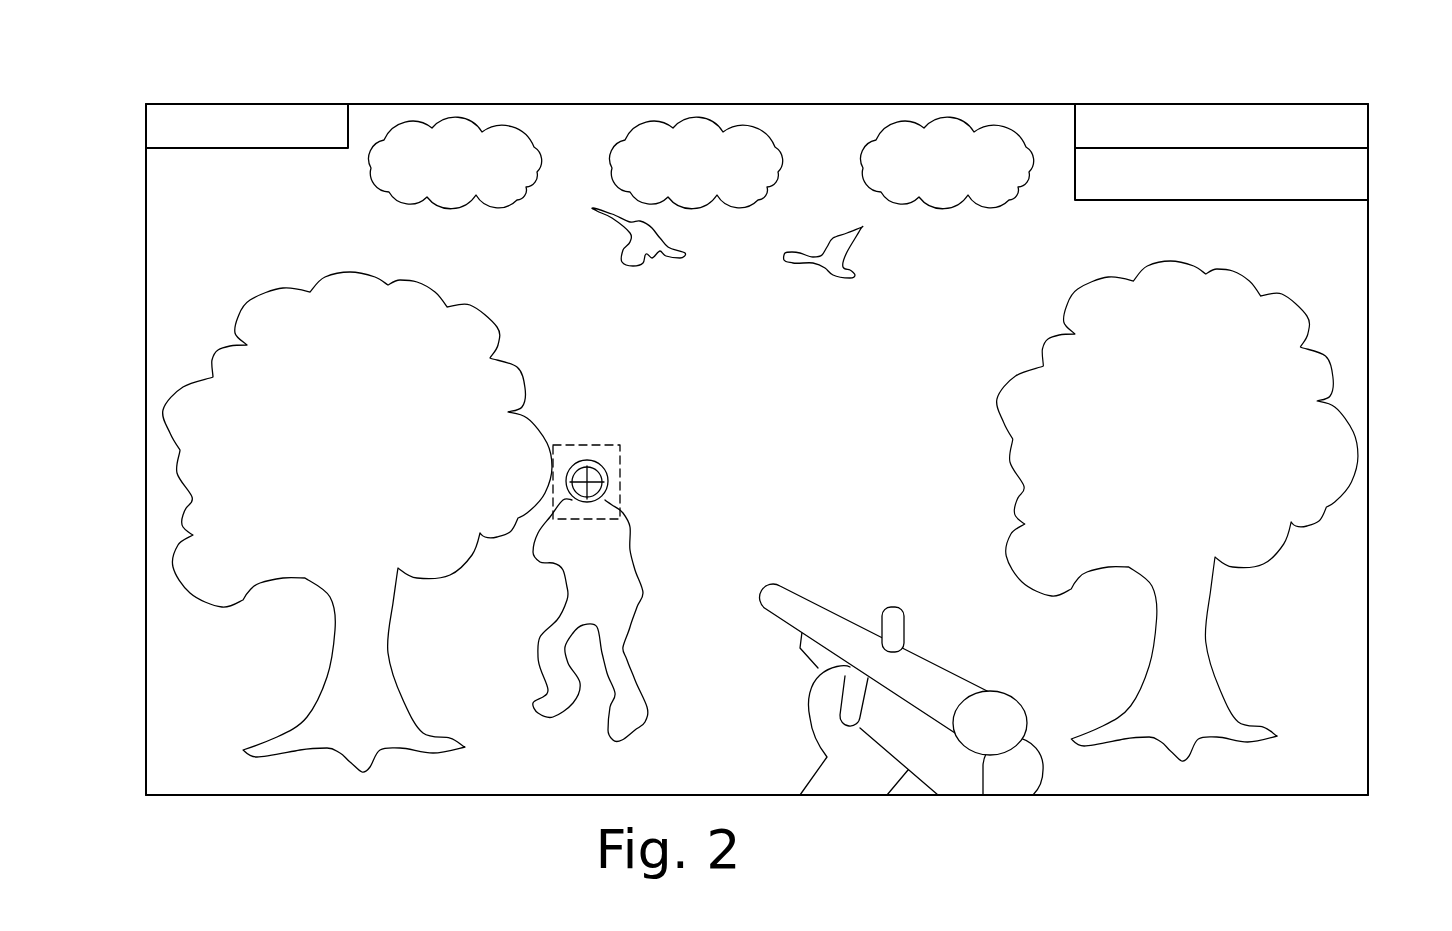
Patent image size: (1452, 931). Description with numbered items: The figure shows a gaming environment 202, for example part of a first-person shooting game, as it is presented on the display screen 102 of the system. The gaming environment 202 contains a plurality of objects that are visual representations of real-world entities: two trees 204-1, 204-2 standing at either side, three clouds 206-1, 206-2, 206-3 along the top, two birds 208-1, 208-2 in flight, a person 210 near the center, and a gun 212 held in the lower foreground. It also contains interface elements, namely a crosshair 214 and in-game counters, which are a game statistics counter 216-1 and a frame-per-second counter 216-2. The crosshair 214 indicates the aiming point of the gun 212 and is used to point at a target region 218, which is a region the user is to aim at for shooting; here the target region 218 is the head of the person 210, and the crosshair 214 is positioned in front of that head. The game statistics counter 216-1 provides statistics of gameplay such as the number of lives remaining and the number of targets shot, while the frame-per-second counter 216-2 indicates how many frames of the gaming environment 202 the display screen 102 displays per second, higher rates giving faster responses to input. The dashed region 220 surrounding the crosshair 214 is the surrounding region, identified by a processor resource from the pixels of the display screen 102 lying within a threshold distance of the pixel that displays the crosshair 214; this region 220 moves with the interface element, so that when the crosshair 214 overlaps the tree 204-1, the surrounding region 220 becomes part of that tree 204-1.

The display screen 102 is at (251, 807).
The gaming environment 202 is at (198, 195).
The tree 204-1 is at (522, 377).
The tree 204-2 is at (1015, 371).
The cloud 206-1 is at (493, 133).
The cloud 206-2 is at (673, 128).
The cloud 206-3 is at (925, 128).
The bird 208-1 is at (628, 234).
The bird 208-2 is at (823, 266).
The person 210 is at (647, 553).
The gun 212 is at (825, 608).
The crosshair 214 is at (597, 491).
The game statistics counter 216-1 is at (1298, 200).
The frame-per-second (FPS) counter 216-2 is at (217, 103).
The target region 218 is at (627, 475).
The surrounding region 220 is at (620, 445).